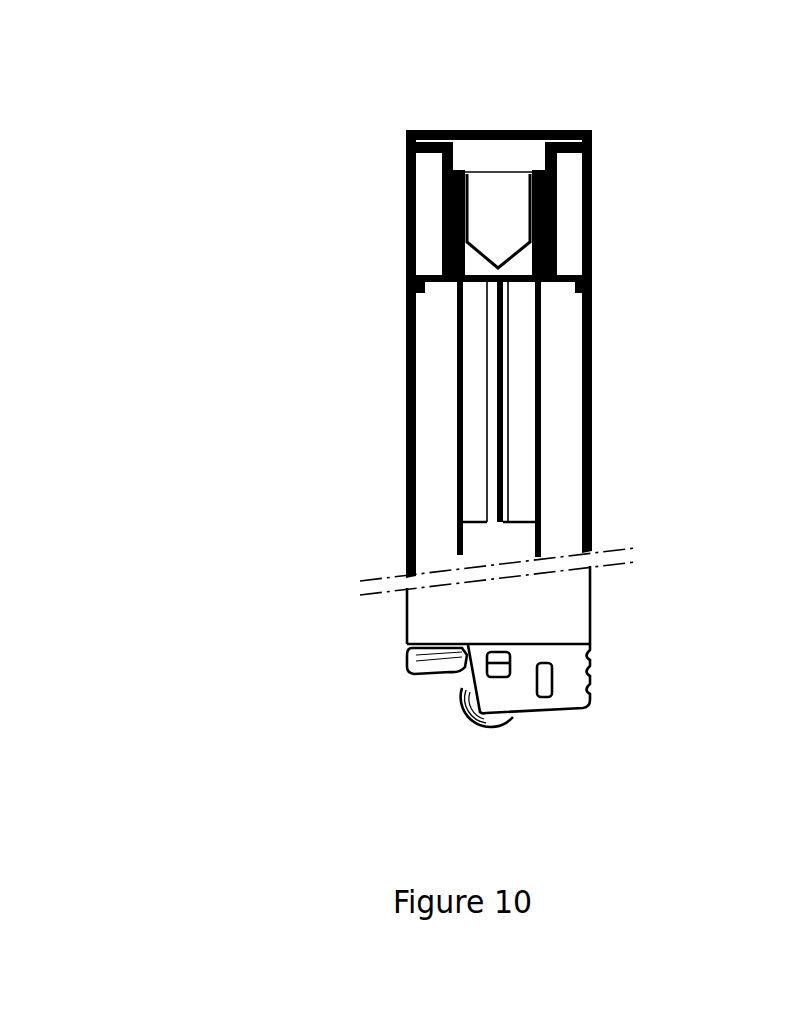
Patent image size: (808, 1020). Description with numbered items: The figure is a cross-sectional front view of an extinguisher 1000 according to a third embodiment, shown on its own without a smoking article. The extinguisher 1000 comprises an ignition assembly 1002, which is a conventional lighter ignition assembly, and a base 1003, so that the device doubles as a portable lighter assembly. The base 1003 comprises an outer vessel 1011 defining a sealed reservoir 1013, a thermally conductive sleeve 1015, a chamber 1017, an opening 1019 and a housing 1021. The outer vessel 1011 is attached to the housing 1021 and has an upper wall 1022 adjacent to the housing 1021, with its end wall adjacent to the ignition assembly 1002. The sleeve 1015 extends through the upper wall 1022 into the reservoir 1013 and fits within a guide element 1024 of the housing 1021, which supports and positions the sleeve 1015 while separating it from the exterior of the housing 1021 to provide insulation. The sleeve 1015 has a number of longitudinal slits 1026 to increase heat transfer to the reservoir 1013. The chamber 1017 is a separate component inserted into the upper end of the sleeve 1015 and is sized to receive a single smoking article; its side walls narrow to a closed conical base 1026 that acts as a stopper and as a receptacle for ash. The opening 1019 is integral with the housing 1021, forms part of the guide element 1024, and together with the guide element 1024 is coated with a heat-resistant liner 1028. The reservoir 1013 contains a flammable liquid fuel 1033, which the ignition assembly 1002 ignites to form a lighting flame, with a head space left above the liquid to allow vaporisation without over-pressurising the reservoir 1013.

The extinguisher 1000 is at (385, 112).
The ignition assembly 1002 is at (600, 660).
The base 1003 is at (598, 336).
The outer vessel 1011 is at (590, 467).
The sealed reservoir 1013 is at (572, 402).
The thermally conductive sleeve 1015 is at (457, 520).
The chamber 1017 is at (528, 222).
The opening 1019 is at (512, 148).
The housing 1021 is at (593, 247).
The upper wall 1022 is at (415, 292).
The guide element 1024 is at (443, 208).
The longitudinal slits and conical base 1026 is at (480, 258).
The heat-resistant liner 1028 is at (453, 148).
The flammable liquid fuel 1033 is at (422, 446).